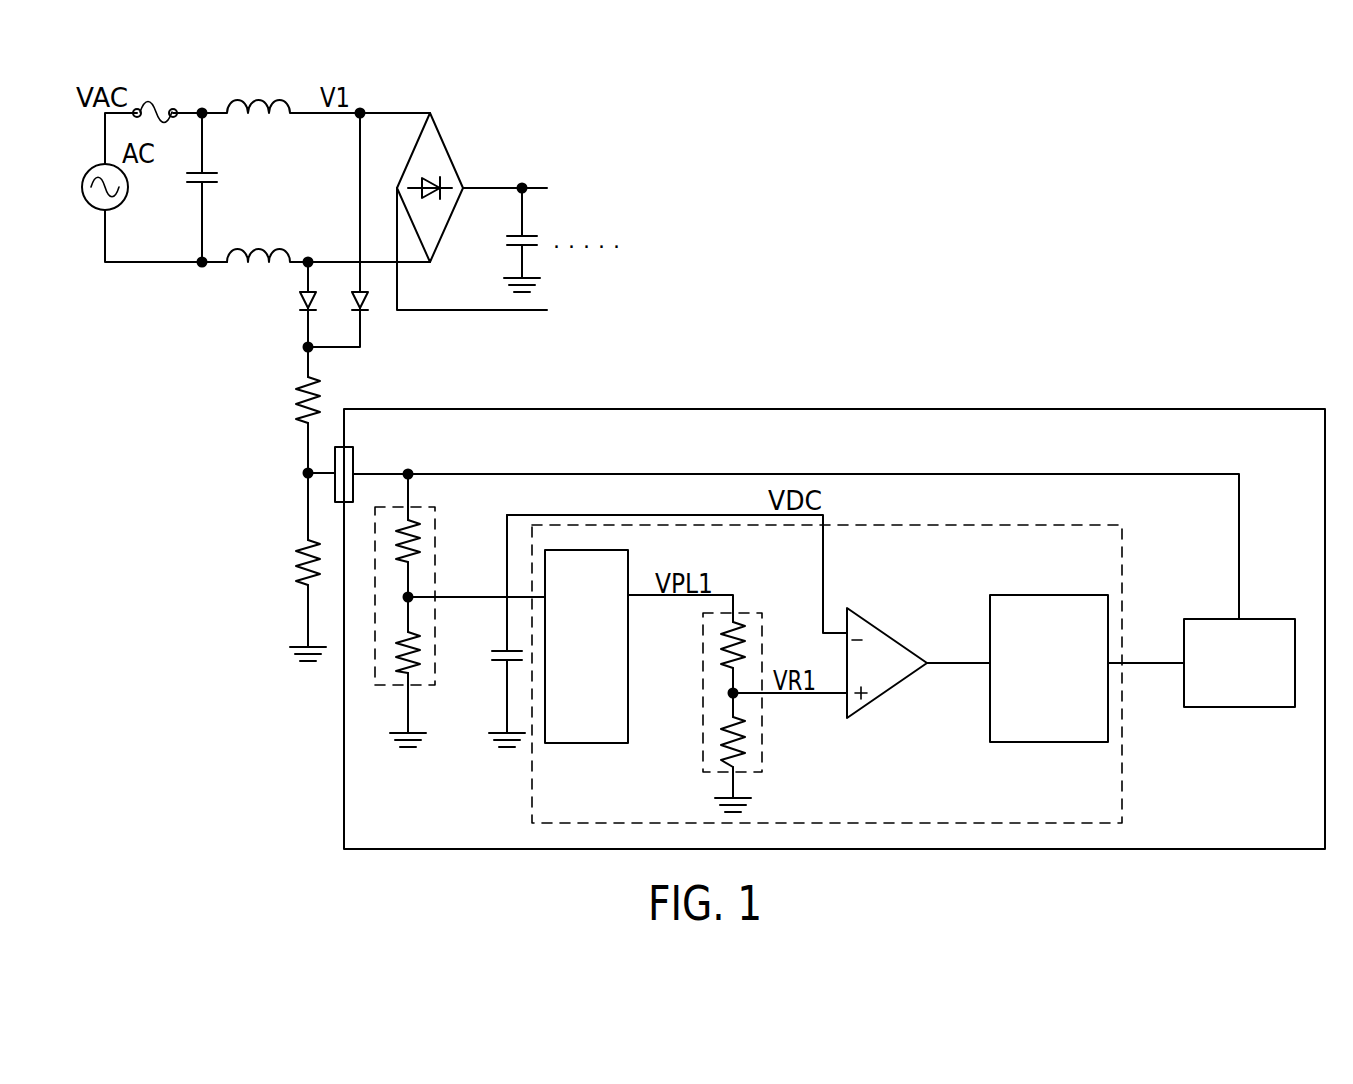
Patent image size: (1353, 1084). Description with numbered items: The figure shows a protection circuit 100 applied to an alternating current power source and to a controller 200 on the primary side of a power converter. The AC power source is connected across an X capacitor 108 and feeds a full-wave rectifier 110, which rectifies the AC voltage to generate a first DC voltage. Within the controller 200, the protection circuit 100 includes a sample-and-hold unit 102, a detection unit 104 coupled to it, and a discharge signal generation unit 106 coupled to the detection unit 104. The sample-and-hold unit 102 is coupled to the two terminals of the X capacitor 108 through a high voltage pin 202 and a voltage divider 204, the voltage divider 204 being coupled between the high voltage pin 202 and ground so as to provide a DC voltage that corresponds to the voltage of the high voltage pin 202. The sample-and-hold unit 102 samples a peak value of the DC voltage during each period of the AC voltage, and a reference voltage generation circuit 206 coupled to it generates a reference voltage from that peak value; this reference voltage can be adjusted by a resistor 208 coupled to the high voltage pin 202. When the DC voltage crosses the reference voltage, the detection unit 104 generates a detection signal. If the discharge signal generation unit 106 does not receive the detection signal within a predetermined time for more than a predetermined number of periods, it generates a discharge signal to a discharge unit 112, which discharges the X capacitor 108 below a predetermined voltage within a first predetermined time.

The protection circuit 100 is at (1122, 775).
The sample-and-hold unit 102 is at (583, 745).
The detection unit 104 is at (888, 633).
The discharge signal generation unit 106 is at (1048, 595).
The X capacitor 108 is at (220, 178).
The full-wave rectifier 110 is at (447, 135).
The discharge unit 112 is at (1262, 619).
The controller 200 is at (835, 408).
The high voltage pin 202 is at (349, 447).
The voltage divider 204 is at (435, 535).
The reference voltage generation circuit 206 is at (762, 737).
The resistor 208 is at (294, 558).